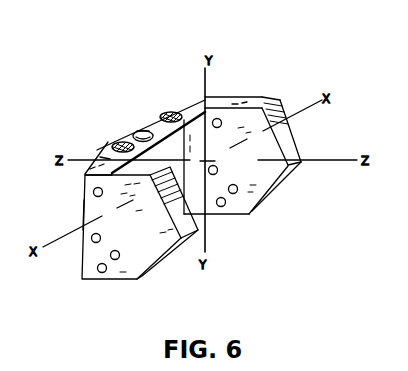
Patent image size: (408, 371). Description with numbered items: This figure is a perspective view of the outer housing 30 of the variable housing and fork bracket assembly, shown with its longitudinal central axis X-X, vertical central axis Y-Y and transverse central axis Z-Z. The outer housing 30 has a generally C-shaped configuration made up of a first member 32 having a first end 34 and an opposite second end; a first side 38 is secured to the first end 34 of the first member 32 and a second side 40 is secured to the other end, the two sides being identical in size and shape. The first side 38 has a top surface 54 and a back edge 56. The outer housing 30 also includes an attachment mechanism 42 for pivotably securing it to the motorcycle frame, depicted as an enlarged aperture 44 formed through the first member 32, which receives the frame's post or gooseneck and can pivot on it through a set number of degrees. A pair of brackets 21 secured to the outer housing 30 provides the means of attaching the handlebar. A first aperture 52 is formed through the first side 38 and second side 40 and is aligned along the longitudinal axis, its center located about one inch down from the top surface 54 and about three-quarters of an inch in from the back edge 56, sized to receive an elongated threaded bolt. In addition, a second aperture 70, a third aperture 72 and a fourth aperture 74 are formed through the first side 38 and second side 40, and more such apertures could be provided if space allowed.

The outer housing 30 is at (279, 54).
The first side 38 is at (204, 100).
The second side 40 is at (246, 96).
The brackets 21 is at (116, 141).
The first member 32 is at (149, 129).
The attachment mechanism 42 is at (128, 104).
The enlarged aperture 44 is at (129, 131).
The first end 34 is at (101, 157).
The first aperture 52 is at (93, 193).
The top surface 54 is at (85, 173).
The back edge 56 is at (88, 207).
The second aperture 70 is at (92, 241).
The third aperture 72 is at (110, 257).
The fourth aperture 74 is at (101, 273).